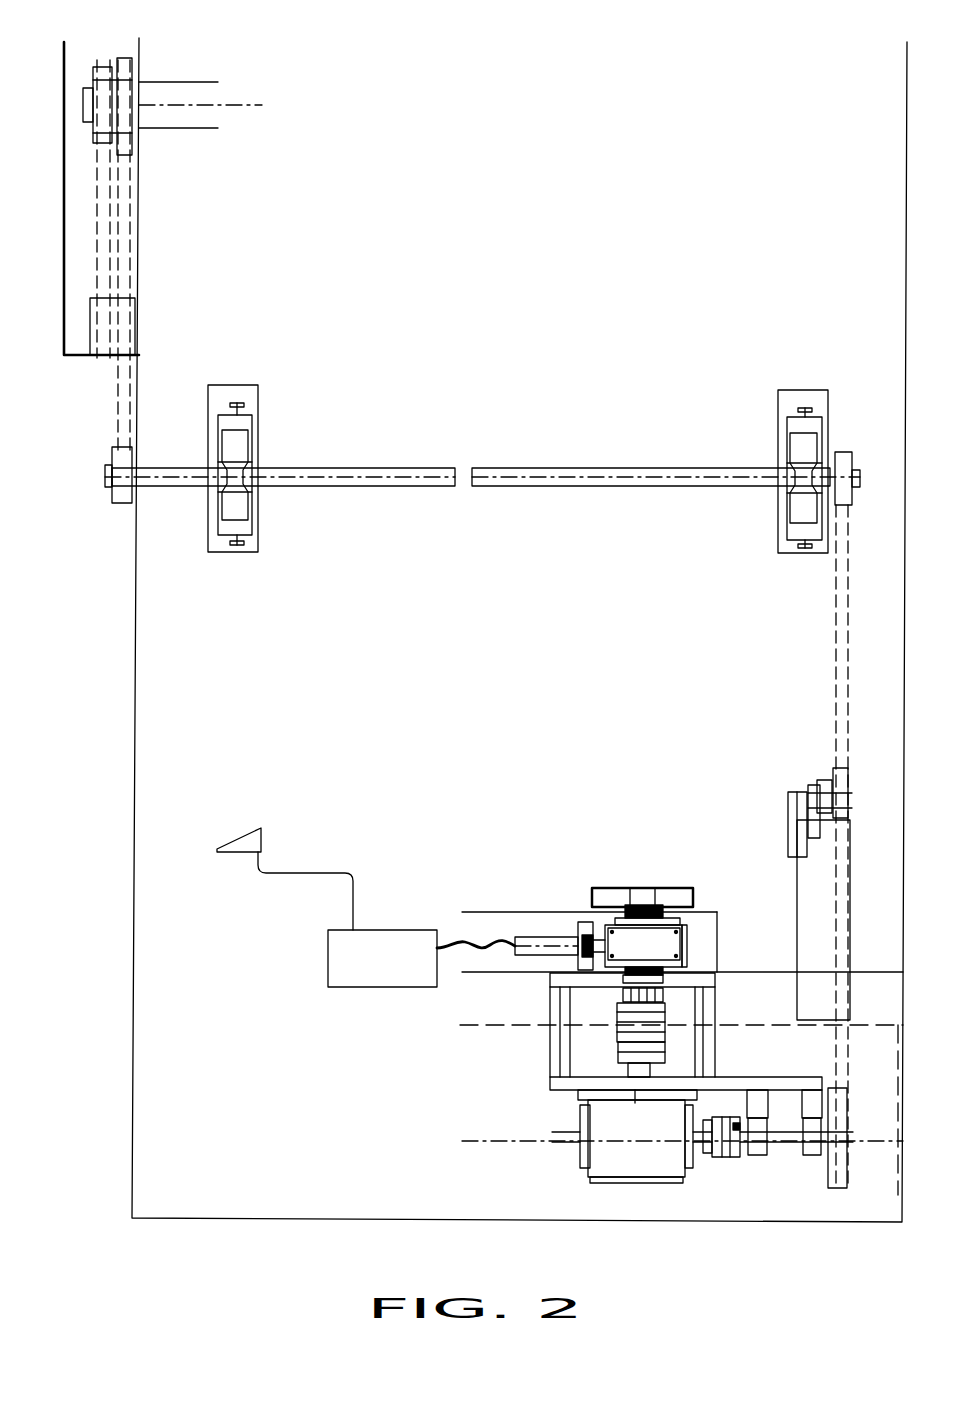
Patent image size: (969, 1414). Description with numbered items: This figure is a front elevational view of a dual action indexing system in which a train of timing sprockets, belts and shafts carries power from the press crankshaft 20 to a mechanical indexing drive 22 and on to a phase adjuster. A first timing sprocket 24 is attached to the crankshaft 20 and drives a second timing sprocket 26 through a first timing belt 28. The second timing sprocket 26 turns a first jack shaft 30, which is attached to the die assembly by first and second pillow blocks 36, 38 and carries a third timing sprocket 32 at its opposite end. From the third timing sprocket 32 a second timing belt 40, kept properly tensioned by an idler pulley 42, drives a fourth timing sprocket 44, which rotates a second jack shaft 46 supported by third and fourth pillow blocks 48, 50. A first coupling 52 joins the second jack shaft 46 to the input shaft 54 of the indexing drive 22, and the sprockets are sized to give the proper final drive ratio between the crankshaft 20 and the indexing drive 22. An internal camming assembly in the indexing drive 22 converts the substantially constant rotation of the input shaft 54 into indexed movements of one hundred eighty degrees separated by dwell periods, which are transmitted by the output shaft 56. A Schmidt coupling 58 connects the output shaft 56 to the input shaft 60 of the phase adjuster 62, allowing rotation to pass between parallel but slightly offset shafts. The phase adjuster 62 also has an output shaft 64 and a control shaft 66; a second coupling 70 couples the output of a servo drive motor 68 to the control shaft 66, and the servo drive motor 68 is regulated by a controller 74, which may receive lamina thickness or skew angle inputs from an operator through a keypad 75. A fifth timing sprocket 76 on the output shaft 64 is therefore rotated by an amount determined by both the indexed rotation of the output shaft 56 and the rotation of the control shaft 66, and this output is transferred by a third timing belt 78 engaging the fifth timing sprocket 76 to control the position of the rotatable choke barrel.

The crankshaft 20 is at (185, 82).
The mechanical indexing drive 22 is at (583, 1172).
The first timing sprocket 24 is at (117, 62).
The second timing sprocket 26 is at (112, 495).
The first timing belt 28 is at (115, 402).
The first jack shaft 30 is at (345, 468).
The third timing sprocket 32 is at (853, 457).
The first pillow block 36 is at (250, 548).
The second pillow block 38 is at (783, 403).
The second timing belt 40 is at (838, 652).
The idler pulley 42 is at (832, 773).
The fourth timing sprocket 44 is at (847, 1175).
The second jack shaft 46 is at (787, 1143).
The third pillow block 48 is at (813, 1155).
The fourth pillow block 50 is at (752, 1155).
The first coupling 52 is at (718, 1157).
The input shaft 54 is at (703, 1150).
The output shaft 56 is at (625, 1070).
The Schmidt coupling 58 is at (613, 1028).
The input shaft 60 is at (650, 988).
The phase adjuster 62 is at (655, 945).
The output shaft 64 is at (638, 897).
The control shaft 66 is at (597, 935).
The servo drive motor 68 is at (523, 935).
The second coupling 70 is at (583, 922).
The controller 74 is at (328, 962).
The keypad 75 is at (243, 835).
The fifth timing sprocket 76 is at (669, 884).
The third timing belt 78 is at (693, 897).